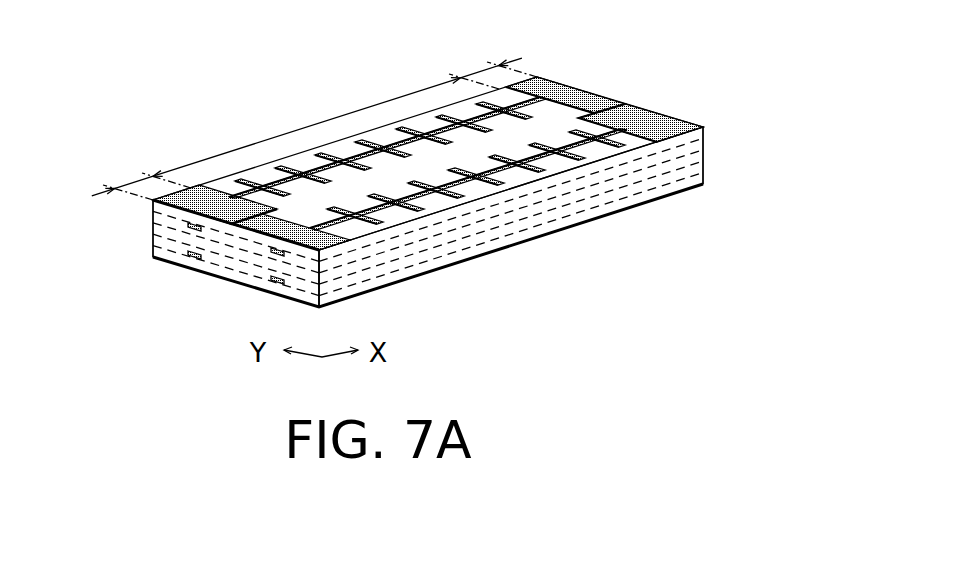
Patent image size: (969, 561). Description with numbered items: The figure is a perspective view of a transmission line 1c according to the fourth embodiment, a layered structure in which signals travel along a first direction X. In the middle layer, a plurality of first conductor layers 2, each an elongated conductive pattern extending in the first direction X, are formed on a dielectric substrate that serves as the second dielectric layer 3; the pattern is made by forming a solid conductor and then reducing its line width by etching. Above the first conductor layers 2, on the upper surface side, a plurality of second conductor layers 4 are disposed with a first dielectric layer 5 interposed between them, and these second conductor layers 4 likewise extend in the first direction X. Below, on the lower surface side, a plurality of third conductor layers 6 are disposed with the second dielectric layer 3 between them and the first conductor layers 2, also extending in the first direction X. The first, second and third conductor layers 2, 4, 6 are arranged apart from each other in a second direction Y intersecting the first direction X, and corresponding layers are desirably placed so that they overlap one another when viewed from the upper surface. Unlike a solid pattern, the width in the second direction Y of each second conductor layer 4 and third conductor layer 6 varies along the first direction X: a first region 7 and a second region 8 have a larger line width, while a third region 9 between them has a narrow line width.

The transmission line 1c is at (92, 317).
The first conductor layer 2 is at (190, 232).
The second dielectric layer 3 is at (703, 152).
The second conductor layer 4 is at (558, 80).
The first dielectric layer 5 is at (703, 136).
The third conductor layer 6 is at (213, 277).
The first region 7 is at (133, 184).
The second region 8 is at (483, 63).
The third region 9 is at (320, 122).